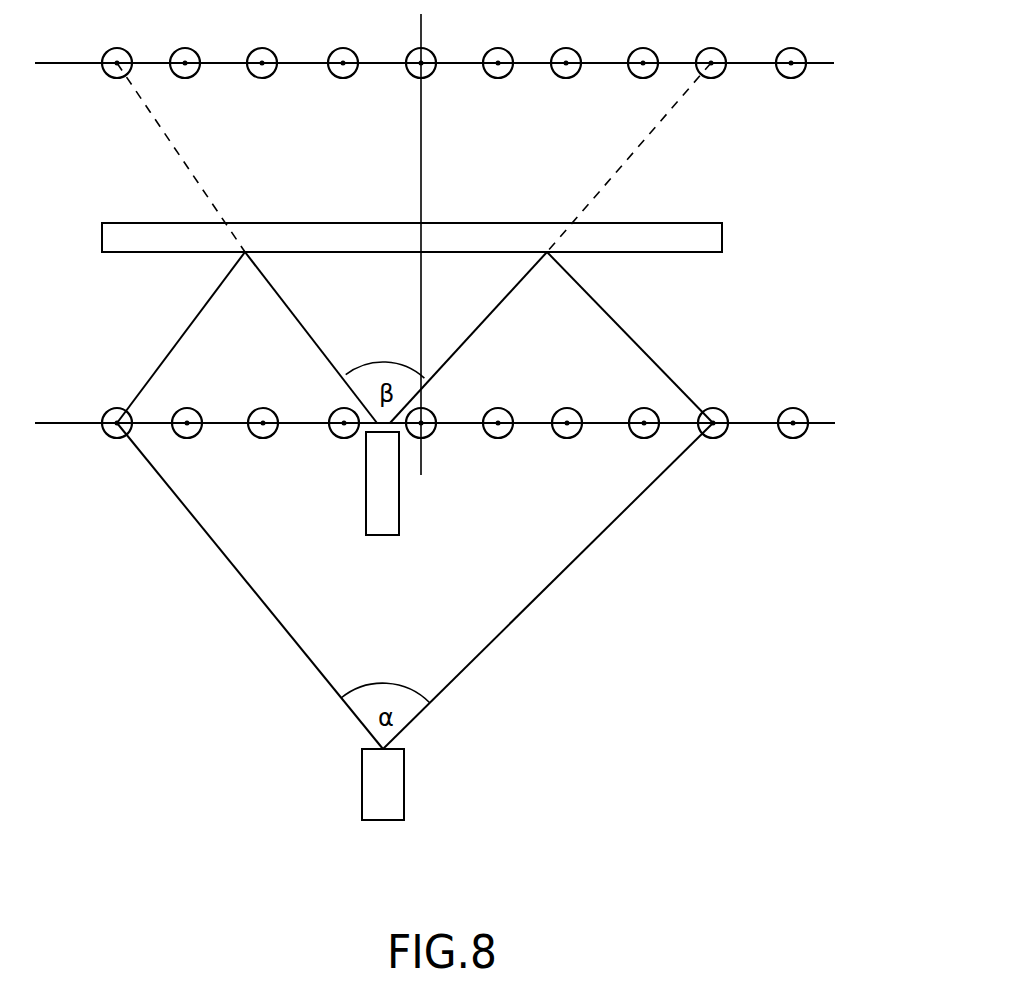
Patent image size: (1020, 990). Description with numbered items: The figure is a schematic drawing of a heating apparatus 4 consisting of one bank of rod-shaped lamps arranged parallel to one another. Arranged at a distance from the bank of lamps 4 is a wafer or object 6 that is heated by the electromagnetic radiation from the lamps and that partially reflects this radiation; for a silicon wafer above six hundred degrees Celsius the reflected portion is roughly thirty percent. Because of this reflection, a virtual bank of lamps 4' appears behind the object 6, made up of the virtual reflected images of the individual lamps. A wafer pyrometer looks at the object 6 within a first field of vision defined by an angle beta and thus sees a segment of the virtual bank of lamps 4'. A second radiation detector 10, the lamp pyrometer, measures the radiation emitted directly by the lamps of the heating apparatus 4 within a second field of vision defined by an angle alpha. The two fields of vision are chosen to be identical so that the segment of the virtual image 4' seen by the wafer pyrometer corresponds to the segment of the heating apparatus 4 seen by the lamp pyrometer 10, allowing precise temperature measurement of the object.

The heating apparatus 4 is at (460, 428).
The virtual bank of lamps 4' is at (457, 69).
The object 6 is at (722, 237).
The second radiation detector 10 is at (387, 775).